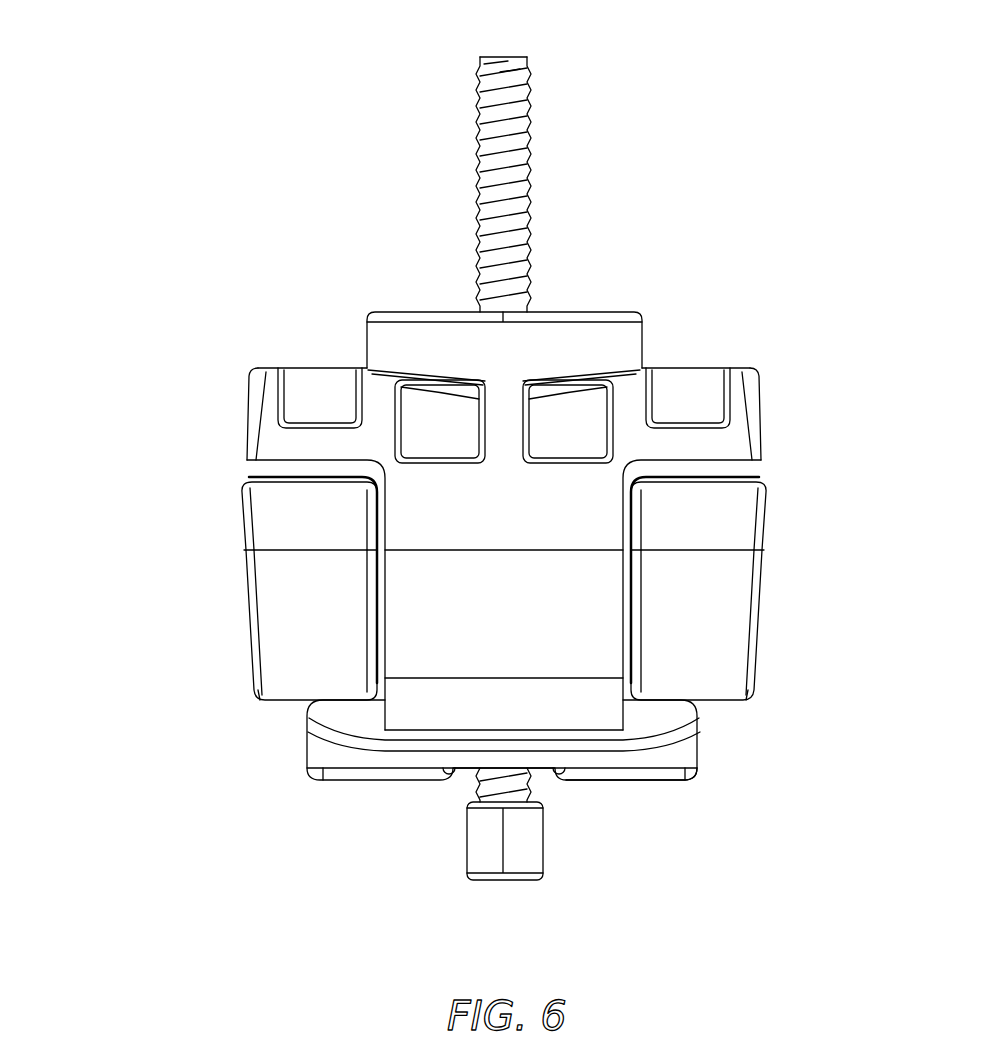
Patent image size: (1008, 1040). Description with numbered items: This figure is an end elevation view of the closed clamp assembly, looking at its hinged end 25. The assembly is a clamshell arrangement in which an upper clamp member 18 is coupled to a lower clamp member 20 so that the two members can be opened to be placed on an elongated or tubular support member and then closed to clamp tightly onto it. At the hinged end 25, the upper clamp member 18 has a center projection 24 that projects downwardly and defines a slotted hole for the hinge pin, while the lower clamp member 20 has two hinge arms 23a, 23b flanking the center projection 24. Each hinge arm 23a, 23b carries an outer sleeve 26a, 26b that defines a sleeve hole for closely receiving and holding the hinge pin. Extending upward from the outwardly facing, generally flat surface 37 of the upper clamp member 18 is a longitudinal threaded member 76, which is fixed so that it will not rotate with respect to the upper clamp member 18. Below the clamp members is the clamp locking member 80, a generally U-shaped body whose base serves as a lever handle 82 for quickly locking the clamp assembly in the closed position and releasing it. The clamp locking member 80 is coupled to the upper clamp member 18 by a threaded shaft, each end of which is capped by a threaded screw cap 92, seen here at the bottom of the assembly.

The longitudinal threaded member 76 is at (528, 88).
The outwardly facing, generally flat surface 37 is at (592, 312).
The upper clamp member 18 is at (318, 382).
The hinged end 25 is at (116, 533).
The outer sleeve 26b is at (283, 521).
The outer sleeve 26a is at (727, 521).
The hinge arm 23b is at (283, 587).
The hinge arm 23a is at (727, 587).
The center projection 24 is at (432, 600).
The lower clamp member 20 is at (285, 676).
The clamp locking member 80 is at (407, 780).
The lever handle 82 is at (600, 768).
The threaded screw cap 92 is at (466, 840).